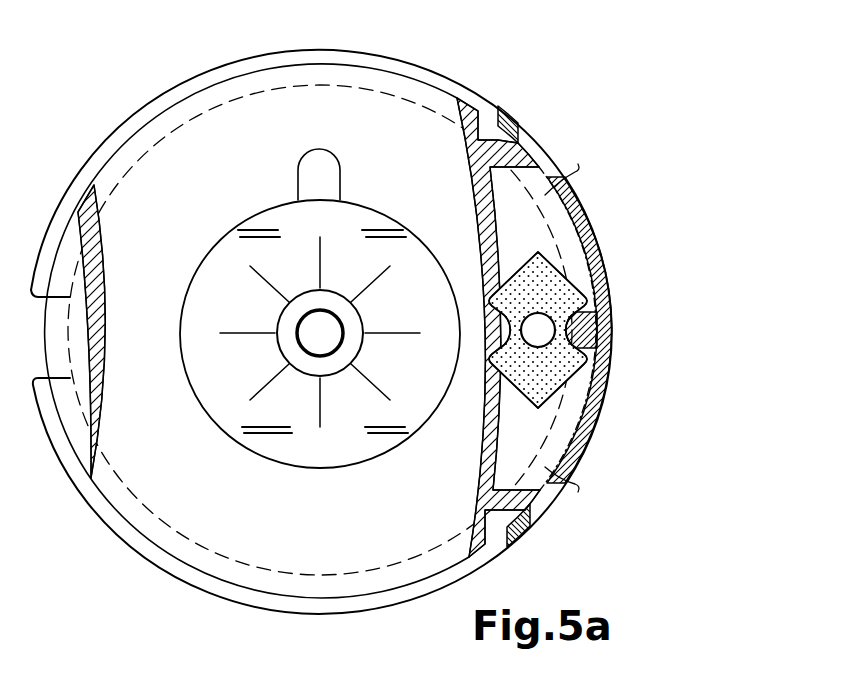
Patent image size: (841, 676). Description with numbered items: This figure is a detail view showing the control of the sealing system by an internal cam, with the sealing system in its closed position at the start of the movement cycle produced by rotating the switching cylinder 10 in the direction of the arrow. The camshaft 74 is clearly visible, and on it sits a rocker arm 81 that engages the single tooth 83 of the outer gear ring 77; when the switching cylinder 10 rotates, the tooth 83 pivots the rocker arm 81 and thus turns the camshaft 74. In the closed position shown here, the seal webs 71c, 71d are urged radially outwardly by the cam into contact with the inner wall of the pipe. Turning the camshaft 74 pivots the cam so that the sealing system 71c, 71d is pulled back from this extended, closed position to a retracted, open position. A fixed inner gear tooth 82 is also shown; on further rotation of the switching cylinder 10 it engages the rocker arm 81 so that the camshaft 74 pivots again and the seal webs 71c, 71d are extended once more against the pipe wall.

The switching cylinder 10 is at (76, 148).
The seal web 71c is at (518, 530).
The seal web 71d is at (508, 126).
The camshaft 74 is at (543, 338).
The gear ring 77 is at (610, 297).
The rocker arm 81 is at (560, 280).
The inner gear tooth 82 is at (325, 173).
The single tooth 83 is at (606, 332).